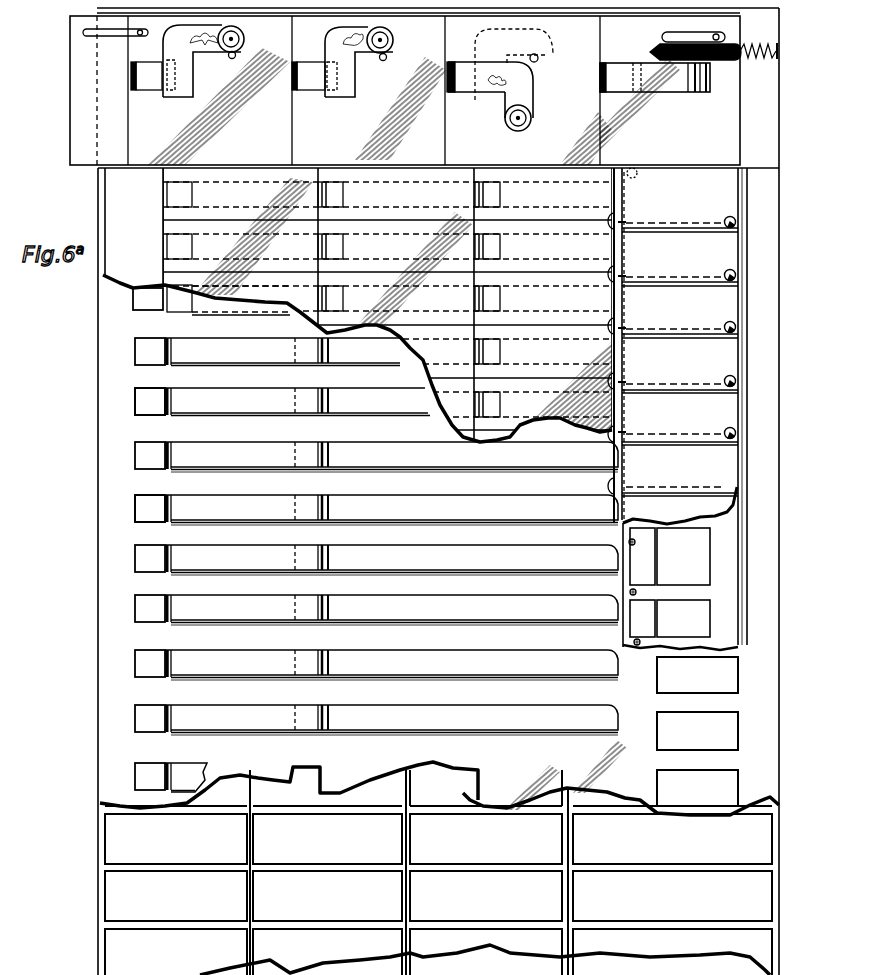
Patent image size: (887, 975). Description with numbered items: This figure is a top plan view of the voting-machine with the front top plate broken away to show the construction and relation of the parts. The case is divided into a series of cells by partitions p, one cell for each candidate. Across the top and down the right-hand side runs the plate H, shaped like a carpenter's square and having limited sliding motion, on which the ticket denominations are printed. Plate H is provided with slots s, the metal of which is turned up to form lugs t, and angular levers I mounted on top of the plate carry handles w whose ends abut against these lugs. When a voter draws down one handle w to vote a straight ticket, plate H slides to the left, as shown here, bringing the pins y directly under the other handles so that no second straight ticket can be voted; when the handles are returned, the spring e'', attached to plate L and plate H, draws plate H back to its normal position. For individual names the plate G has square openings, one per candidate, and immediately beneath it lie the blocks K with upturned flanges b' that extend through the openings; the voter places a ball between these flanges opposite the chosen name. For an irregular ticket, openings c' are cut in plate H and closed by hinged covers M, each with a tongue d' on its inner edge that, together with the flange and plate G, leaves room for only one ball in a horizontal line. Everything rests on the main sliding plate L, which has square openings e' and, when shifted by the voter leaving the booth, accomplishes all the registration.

The plate H is at (405, 89).
The lug t is at (131, 72).
The slot s is at (147, 80).
The angular lever I is at (192, 66).
The handle w is at (245, 38).
The pin y is at (234, 56).
The spring e'' is at (733, 57).
The plate G is at (358, 305).
The block K is at (375, 540).
The square opening e' is at (114, 455).
The upturned flange b' is at (309, 708).
The cover M is at (677, 406).
The tongue d' is at (646, 299).
The knob q' is at (747, 328).
The opening c' is at (680, 664).
The main sliding plate L is at (118, 617).
The partition p is at (253, 776).